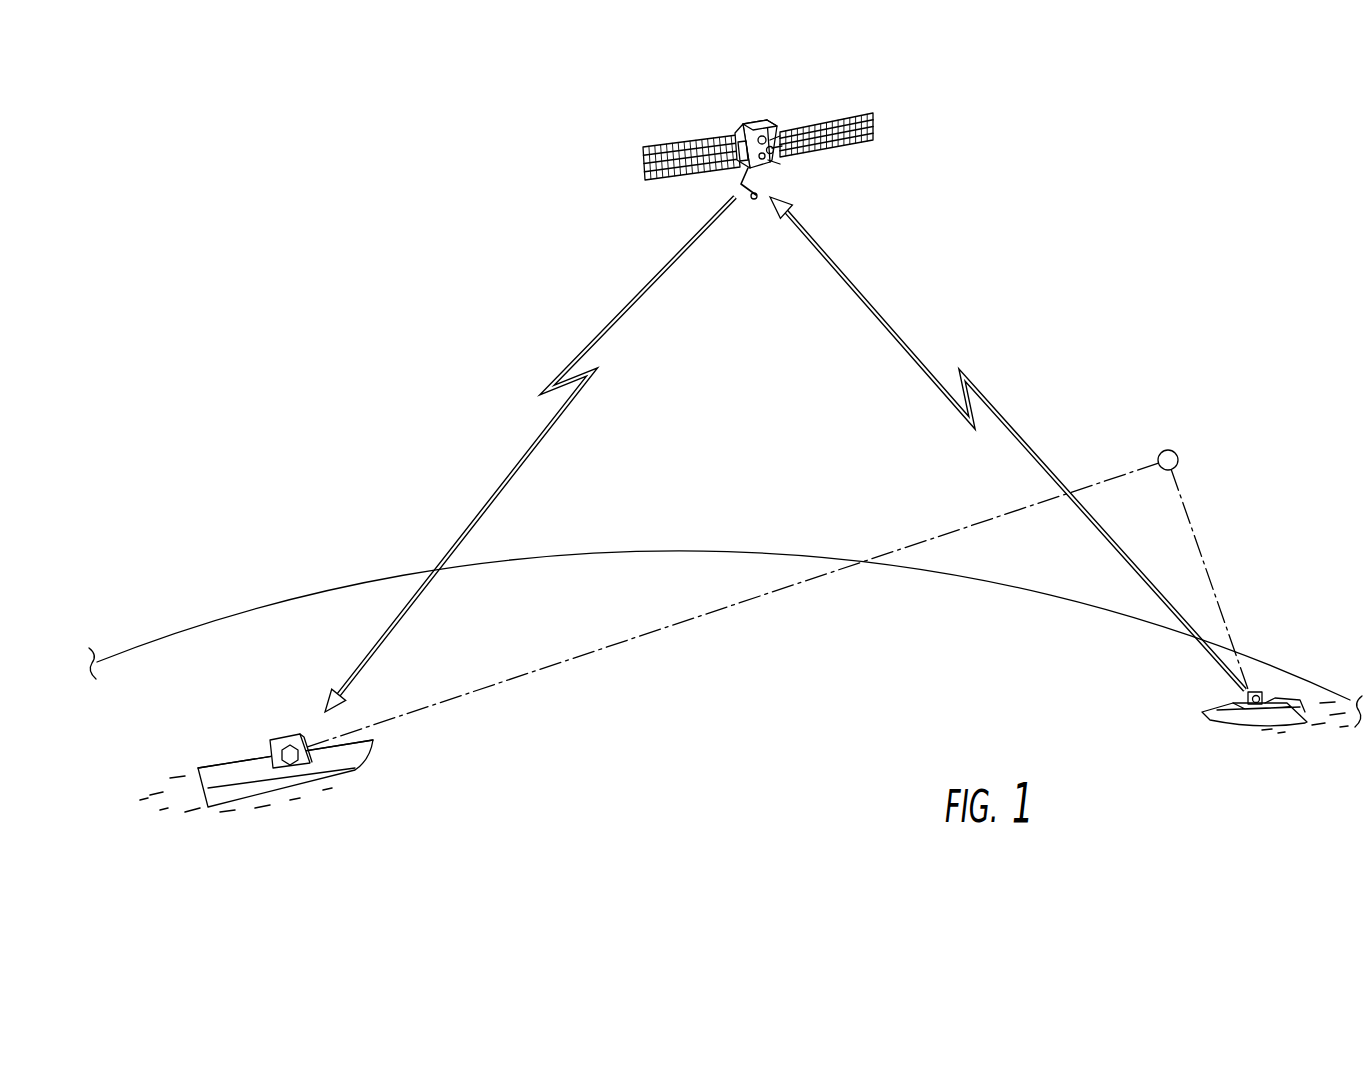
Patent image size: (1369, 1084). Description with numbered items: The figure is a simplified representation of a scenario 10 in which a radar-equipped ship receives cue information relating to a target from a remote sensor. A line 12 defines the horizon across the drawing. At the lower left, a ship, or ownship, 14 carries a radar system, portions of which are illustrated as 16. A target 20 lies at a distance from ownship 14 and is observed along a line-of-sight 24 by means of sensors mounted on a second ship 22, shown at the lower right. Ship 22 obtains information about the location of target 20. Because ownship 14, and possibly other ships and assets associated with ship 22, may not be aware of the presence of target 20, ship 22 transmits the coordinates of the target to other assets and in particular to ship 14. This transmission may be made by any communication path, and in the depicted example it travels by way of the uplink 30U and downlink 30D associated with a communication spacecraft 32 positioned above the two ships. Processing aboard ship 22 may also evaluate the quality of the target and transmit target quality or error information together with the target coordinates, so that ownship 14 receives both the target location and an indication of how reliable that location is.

The scenario 10 is at (856, 696).
The line 12 is at (599, 552).
The ship (ownship) 14 is at (244, 768).
The radar system 16 is at (288, 732).
The target 20 is at (1176, 452).
The ship 22 is at (1230, 706).
The line-of-sight 24 is at (1203, 562).
The downlink 30D is at (620, 318).
The uplink 30U is at (913, 353).
The communication spacecraft 32 is at (756, 124).